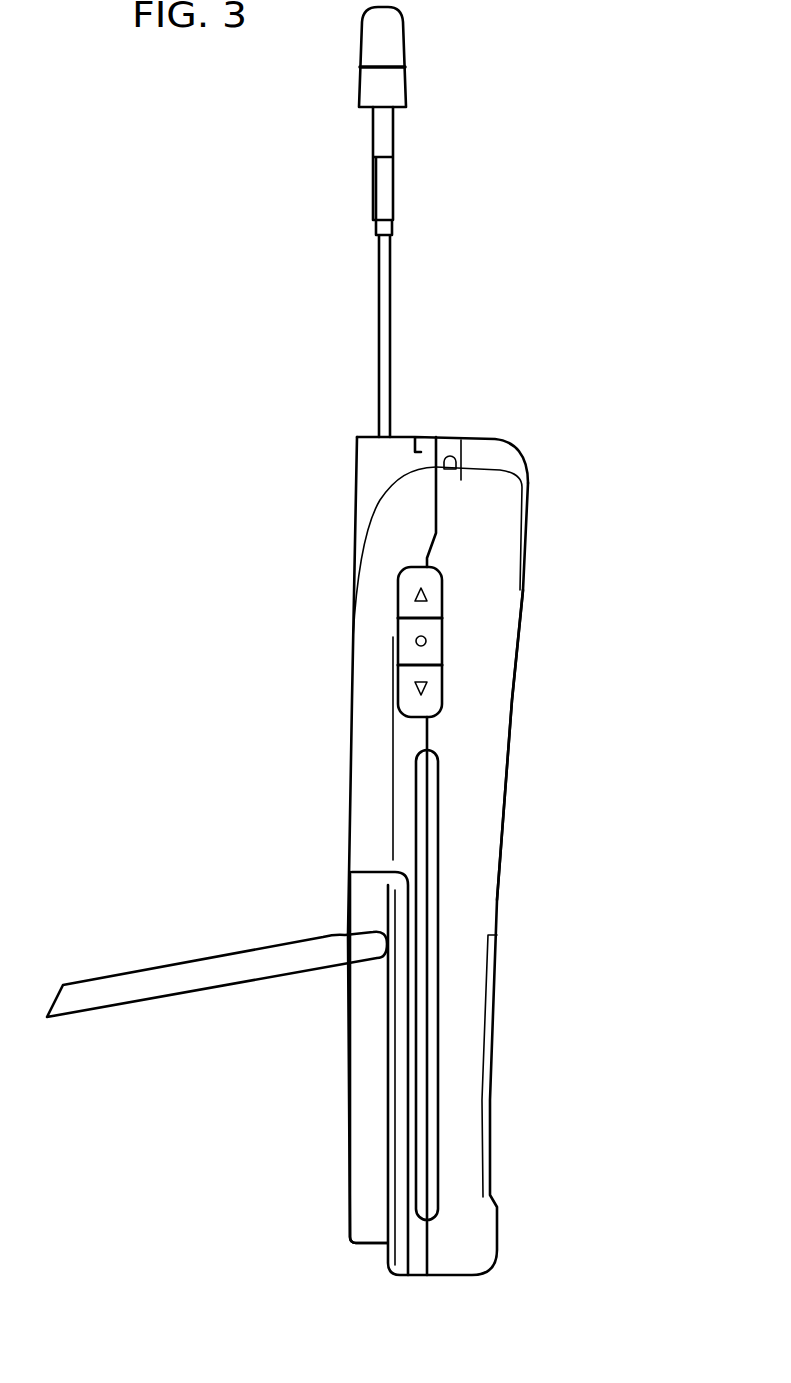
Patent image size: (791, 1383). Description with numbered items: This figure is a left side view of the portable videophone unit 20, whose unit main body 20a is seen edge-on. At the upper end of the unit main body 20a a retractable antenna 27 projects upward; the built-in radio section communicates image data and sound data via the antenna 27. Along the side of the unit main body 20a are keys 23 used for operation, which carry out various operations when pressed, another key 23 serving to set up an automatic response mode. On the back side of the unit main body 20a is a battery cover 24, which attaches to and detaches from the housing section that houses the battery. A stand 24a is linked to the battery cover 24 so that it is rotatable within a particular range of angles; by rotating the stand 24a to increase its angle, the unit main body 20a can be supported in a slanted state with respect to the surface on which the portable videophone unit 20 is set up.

The portable videophone unit 20 is at (529, 386).
The main body 20a is at (510, 758).
The keys 23 is at (406, 597).
The battery cover 24 is at (360, 1125).
The stand 24a is at (192, 975).
The retractable antenna 27 is at (395, 88).